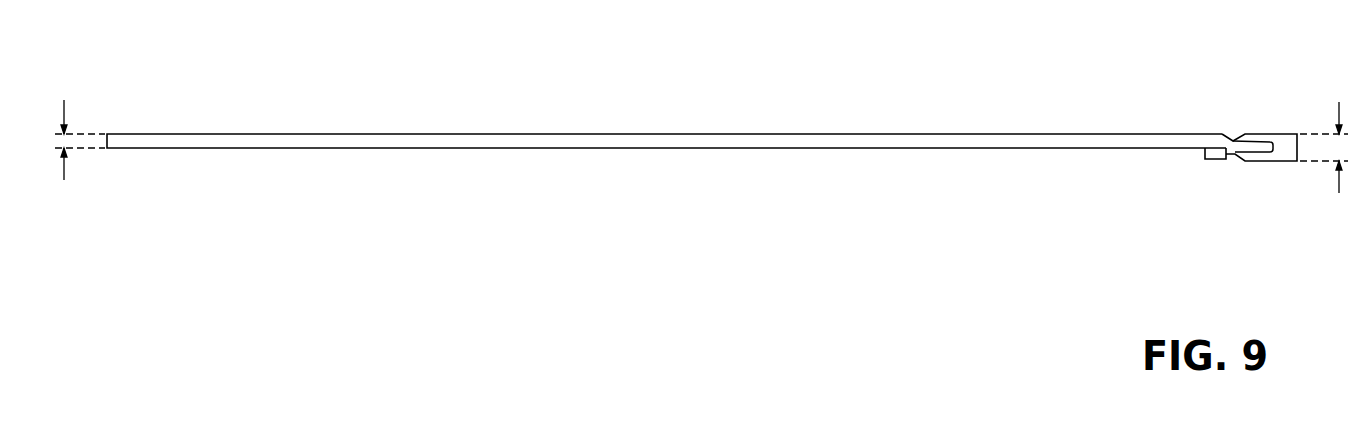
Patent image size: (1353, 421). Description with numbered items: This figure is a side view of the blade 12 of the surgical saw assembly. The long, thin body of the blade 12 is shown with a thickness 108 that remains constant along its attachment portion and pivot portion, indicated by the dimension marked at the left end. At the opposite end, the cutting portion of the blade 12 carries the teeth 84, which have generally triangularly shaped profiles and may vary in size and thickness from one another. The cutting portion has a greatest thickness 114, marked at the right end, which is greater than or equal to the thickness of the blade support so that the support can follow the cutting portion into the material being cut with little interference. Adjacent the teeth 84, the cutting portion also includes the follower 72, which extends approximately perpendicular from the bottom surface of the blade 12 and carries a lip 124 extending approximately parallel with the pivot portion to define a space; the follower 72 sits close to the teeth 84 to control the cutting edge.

The blade 12 is at (810, 117).
The teeth 84 is at (1262, 133).
The follower 72 is at (1224, 162).
The lip 124 is at (1206, 157).
The thickness 108 is at (66, 112).
The thickness 114 is at (1339, 104).